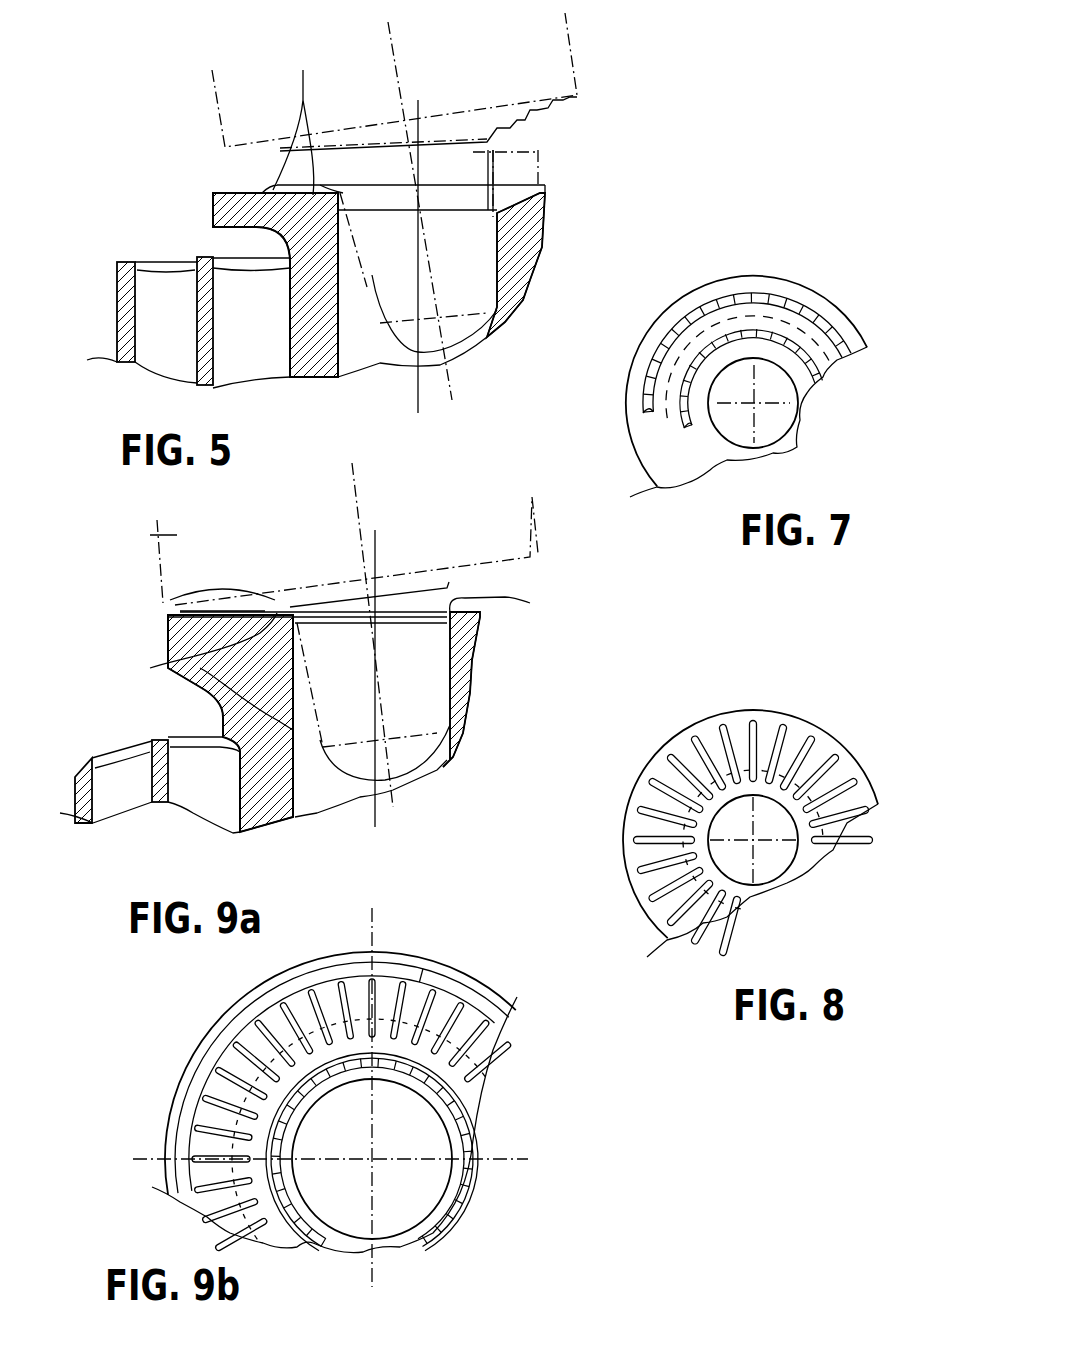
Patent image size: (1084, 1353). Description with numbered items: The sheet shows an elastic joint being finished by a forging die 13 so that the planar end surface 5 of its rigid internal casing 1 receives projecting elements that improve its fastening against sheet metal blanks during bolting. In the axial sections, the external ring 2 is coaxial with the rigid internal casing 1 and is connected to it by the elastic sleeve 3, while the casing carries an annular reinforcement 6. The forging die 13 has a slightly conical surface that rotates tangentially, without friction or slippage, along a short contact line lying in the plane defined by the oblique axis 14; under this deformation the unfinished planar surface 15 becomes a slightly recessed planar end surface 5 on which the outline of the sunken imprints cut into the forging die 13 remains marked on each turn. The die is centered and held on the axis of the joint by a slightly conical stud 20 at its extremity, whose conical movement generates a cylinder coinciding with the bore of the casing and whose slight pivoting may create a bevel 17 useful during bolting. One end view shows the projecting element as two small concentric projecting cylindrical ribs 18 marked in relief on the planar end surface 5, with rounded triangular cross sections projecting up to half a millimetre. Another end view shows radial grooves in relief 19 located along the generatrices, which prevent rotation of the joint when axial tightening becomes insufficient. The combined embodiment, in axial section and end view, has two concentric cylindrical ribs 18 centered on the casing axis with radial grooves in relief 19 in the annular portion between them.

In FIG. 5, the rigid internal casing 1 is at (517, 250).
In FIG. 9a, the rigid internal casing 1 is at (260, 780).
In FIG. 5, the external ring 2 is at (120, 323).
In FIG. 9a, the external ring 2 is at (73, 822).
In FIG. 5, the elastic sleeve 3 is at (158, 298).
In FIG. 9a, the elastic sleeve 3 is at (197, 767).
In FIG. 5, the planar end surface 5 is at (223, 192).
In FIG. 7, the planar end surface 5 is at (747, 290).
In FIG. 9a, the planar end surface 5 is at (193, 592).
In FIG. 8, the planar end surface 5 is at (770, 718).
In FIG. 5, the annular reinforcement 6 is at (223, 210).
In FIG. 9a, the annular reinforcement 6 is at (300, 780).
In FIG. 5, the forging die 13 is at (570, 28).
In FIG. 9a, the forging die 13 is at (148, 533).
In FIG. 5, the oblique axis 14 is at (442, 337).
In FIG. 9a, the oblique axis 14 is at (358, 507).
In FIG. 5, the unfinished planar surface 15 is at (530, 143).
In FIG. 9a, the bevel 17 is at (507, 603).
In FIG. 5, the projecting cylindrical ribs 18 is at (383, 120).
In FIG. 9a, the projecting cylindrical ribs 18 is at (200, 668).
In FIG. 9a, the radial grooves in relief 19 is at (233, 607).
In FIG. 8, the radial grooves in relief 19 is at (660, 785).
In FIG. 9b, the radial grooves in relief 19 is at (470, 1042).
In FIG. 5, the slightly conical stud 20 is at (375, 272).
In FIG. 9a, the slightly conical stud 20 is at (340, 672).